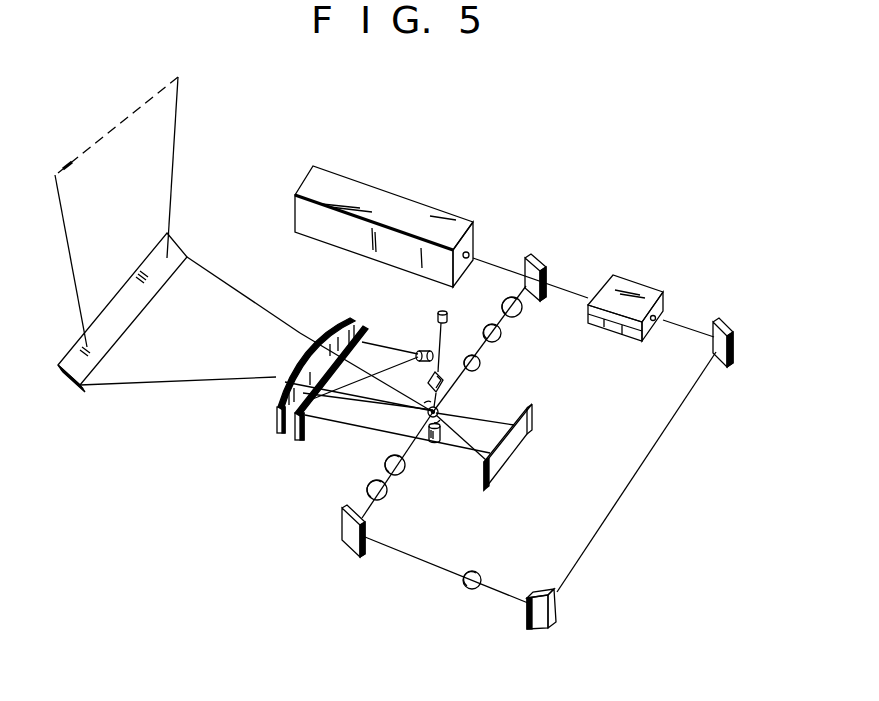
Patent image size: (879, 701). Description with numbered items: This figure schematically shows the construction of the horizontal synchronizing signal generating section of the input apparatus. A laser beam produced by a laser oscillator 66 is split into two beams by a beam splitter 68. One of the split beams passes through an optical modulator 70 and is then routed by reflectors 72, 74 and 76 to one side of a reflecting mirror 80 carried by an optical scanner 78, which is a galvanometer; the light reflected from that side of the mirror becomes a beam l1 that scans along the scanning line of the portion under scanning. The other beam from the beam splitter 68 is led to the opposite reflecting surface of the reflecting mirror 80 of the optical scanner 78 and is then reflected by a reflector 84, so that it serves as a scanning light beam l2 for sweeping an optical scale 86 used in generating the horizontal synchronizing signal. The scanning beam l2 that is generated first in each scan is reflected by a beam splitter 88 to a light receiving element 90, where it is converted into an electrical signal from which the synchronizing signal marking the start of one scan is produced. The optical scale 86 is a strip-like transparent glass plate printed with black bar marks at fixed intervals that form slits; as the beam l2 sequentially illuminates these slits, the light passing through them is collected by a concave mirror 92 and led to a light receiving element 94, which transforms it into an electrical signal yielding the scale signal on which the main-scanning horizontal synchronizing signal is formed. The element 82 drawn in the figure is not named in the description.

The laser oscillator 66 is at (408, 211).
The beam splitter 68 is at (543, 270).
The optical modulator 70 is at (638, 283).
The reflector 72 is at (730, 321).
The reflector 74 is at (550, 626).
The reflector 76 is at (347, 546).
The optical scanner 78 is at (437, 444).
The reflecting mirror 80 is at (440, 410).
The lamp 82 is at (136, 306).
The reflector 84 is at (520, 438).
The optical scale 86 is at (371, 326).
The beam splitter 88 is at (441, 372).
The light receiving element 90 is at (447, 314).
The concave mirror 92 is at (323, 334).
The light receiving element 94 is at (420, 352).
The scanning light beam l1 is at (176, 194).
The scanning light beam l2 is at (408, 382).